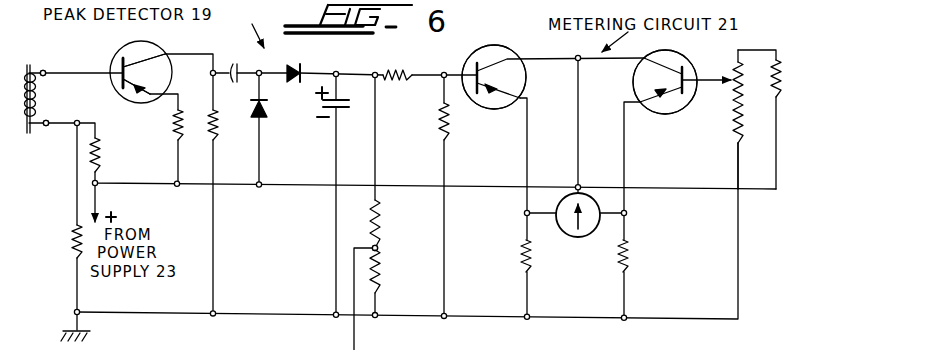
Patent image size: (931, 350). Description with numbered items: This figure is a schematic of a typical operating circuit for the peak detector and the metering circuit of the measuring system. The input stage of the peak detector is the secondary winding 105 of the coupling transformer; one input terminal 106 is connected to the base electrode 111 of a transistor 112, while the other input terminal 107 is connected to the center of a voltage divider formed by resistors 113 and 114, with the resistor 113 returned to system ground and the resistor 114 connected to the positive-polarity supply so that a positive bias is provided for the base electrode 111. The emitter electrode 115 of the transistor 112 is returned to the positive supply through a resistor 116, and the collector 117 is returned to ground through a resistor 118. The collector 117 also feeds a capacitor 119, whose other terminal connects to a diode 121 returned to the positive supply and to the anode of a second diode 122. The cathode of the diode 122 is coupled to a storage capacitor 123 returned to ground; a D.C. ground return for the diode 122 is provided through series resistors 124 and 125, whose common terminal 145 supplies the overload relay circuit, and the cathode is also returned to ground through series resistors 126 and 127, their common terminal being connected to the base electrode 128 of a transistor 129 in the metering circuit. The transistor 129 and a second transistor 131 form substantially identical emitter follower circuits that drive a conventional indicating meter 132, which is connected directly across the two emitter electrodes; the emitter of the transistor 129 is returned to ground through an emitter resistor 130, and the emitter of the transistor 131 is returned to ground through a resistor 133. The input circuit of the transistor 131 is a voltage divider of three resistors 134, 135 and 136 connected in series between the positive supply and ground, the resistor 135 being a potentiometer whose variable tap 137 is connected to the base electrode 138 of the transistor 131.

The secondary winding 105 is at (30, 128).
The input terminal 106 is at (44, 72).
The input terminal 107 is at (47, 122).
The base electrode 111 is at (117, 93).
The transistor 112 is at (122, 44).
The resistor 113 is at (70, 240).
The resistor 114 is at (121, 155).
The emitter electrode 115 is at (148, 97).
The resistor 116 is at (179, 136).
The collector 117 is at (158, 50).
The resistor 118 is at (215, 136).
The capacitor 119 is at (244, 63).
The diode 121 is at (268, 110).
The second diode 122 is at (296, 64).
The storage capacitor 123 is at (338, 108).
The resistor 124 is at (381, 213).
The resistor 125 is at (381, 268).
The resistor 126 is at (386, 73).
The resistor 127 is at (450, 125).
The base electrode 128 is at (463, 66).
The transistor 129 is at (528, 78).
The resistor 130 is at (518, 257).
The second transistor 131 is at (666, 114).
The indicating meter 132 is at (577, 238).
The resistor 133 is at (630, 265).
The resistor 134 is at (753, 166).
The potentiometer 135 is at (741, 76).
The resistor 136 is at (781, 90).
The variable tap 137 is at (713, 82).
The base electrode 138 is at (688, 61).
The common terminal 145 is at (378, 248).